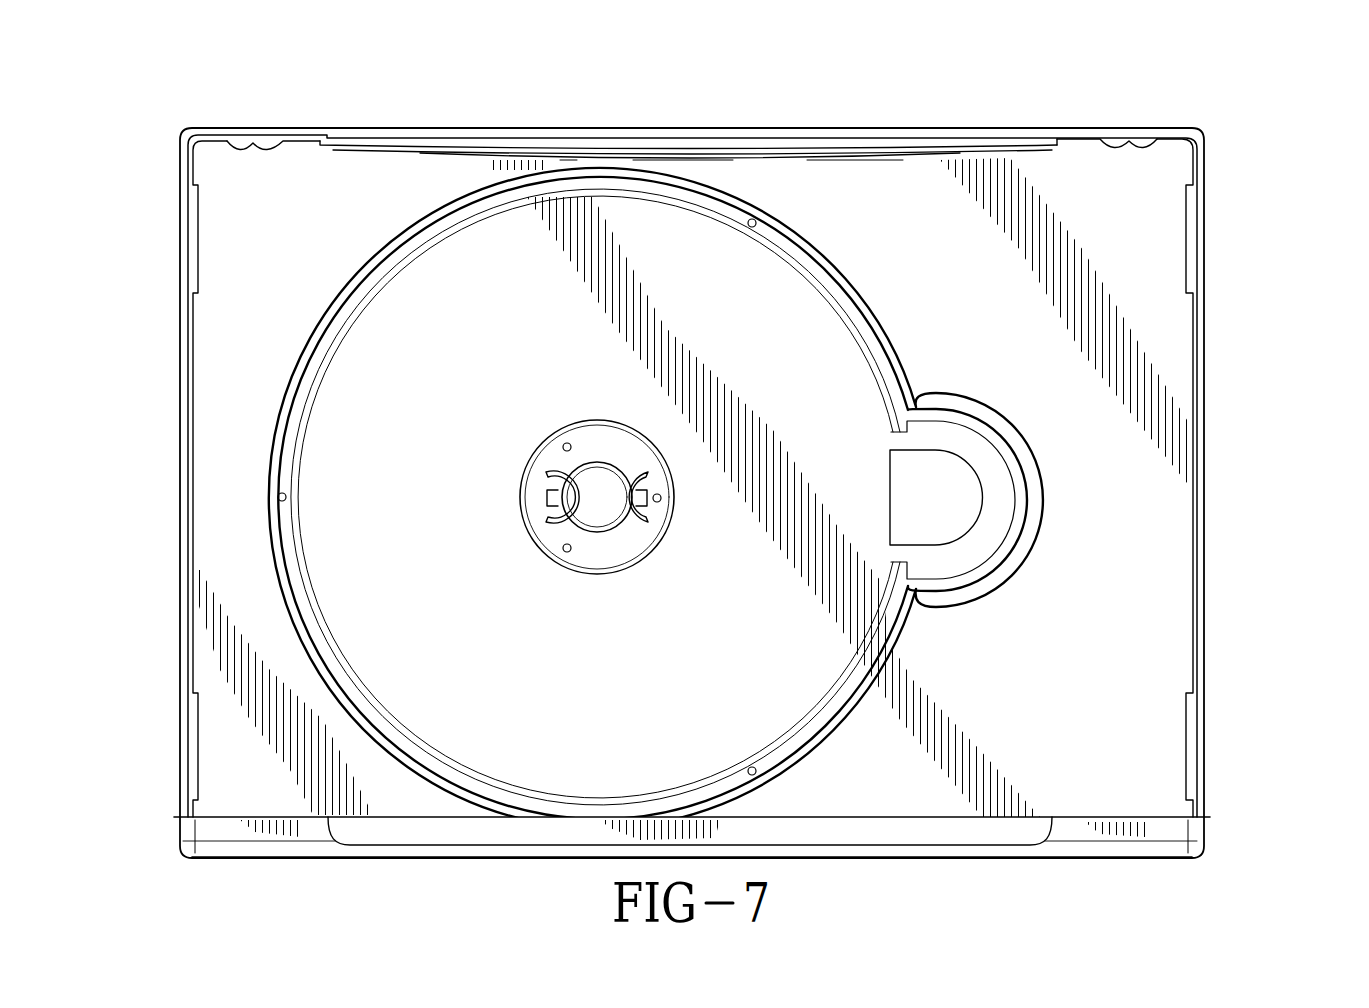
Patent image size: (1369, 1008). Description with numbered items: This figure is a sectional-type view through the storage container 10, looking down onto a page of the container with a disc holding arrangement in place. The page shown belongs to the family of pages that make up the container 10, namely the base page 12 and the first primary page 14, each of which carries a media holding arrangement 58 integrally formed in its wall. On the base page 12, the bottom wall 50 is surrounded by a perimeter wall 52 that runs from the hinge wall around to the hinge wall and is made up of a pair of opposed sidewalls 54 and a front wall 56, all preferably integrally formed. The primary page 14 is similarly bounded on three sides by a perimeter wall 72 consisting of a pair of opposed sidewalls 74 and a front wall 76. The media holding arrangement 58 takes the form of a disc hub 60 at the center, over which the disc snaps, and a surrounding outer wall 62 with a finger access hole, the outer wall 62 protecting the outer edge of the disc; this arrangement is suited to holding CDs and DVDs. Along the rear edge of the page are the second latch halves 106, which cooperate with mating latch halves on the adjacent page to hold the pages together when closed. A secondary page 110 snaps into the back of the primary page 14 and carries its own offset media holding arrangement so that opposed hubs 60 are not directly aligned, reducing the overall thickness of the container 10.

The storage container 10 is at (1230, 110).
The base page 12 is at (1163, 863).
The first primary page 14 is at (1216, 419).
The bottom wall 50 is at (1117, 856).
The perimeter wall 52 is at (309, 837).
The sidewalls 54 is at (181, 830).
The front wall 56 is at (234, 834).
The media holding arrangement 58 is at (840, 254).
The hub 60 is at (597, 462).
The outer wall 62 is at (823, 711).
The perimeter wall 72 is at (1145, 124).
The sidewalls 74 is at (1208, 352).
The front wall 76 is at (1075, 128).
The second half of a latch 106 is at (258, 145).
The secondary page 110 is at (1154, 608).